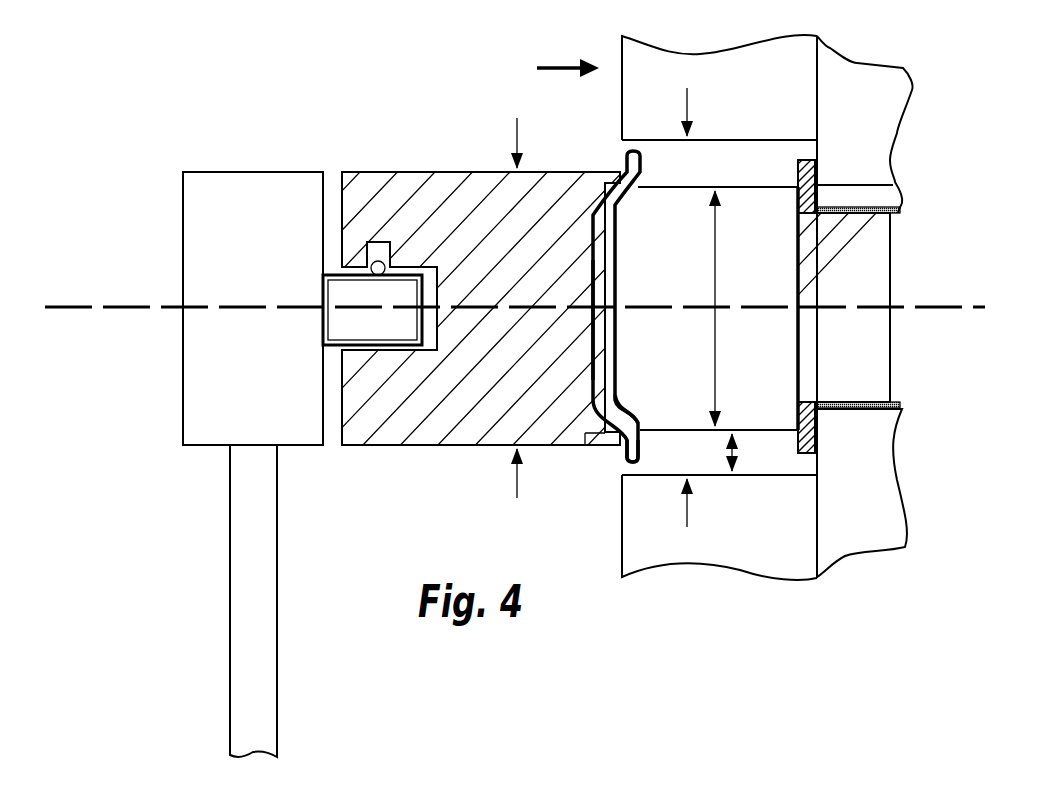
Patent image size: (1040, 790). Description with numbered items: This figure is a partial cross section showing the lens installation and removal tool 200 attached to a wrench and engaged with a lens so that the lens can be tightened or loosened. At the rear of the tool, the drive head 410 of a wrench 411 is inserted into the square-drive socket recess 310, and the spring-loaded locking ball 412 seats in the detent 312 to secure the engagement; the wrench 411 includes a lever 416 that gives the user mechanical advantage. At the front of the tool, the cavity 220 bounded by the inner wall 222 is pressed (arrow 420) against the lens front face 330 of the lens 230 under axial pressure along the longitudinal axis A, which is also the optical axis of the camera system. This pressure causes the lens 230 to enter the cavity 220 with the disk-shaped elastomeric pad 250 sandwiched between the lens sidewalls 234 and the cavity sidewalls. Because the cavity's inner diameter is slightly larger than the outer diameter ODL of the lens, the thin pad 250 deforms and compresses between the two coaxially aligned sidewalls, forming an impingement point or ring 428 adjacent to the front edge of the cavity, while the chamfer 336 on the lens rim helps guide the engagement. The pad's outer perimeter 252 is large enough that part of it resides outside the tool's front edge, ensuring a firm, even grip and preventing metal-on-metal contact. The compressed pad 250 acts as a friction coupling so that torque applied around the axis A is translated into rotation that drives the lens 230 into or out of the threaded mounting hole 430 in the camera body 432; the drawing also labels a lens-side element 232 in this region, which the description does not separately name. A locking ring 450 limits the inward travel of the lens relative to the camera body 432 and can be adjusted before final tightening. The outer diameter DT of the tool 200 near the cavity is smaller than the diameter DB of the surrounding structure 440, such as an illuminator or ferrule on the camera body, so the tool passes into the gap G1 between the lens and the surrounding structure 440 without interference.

The lens installation and removal tool 200 is at (386, 158).
The cavity 220 is at (620, 240).
The inner wall 222 is at (585, 192).
The lens 230 is at (746, 395).
The bearing block 232 is at (885, 334).
The lens sidewalls 234 is at (764, 430).
The pad 250 is at (620, 460).
The outer perimeter of the pad 252 is at (637, 478).
The square-drive socket recess 310 is at (447, 276).
The detent 312 is at (366, 242).
The lens front face 330 is at (604, 352).
The chamfer 336 is at (626, 195).
The drive head 410 is at (249, 331).
The wrench 411 is at (190, 220).
The spring-loaded locking ball 412 is at (350, 294).
The lever 416 is at (247, 485).
The engagement arrow 420 is at (557, 62).
The impingement point/ring 428 is at (648, 410).
The threaded mounting hole 430 is at (910, 404).
The camera body 432 is at (884, 143).
The surrounding structure 440 is at (643, 52).
The locking ring 450 is at (893, 186).
The longitudinal axis A is at (965, 310).
The outer diameter of the lens ODL is at (713, 280).
The diameter of the surrounding structure DB is at (690, 112).
The outer diameter of the tool DT is at (516, 487).
The gap G1 is at (728, 455).